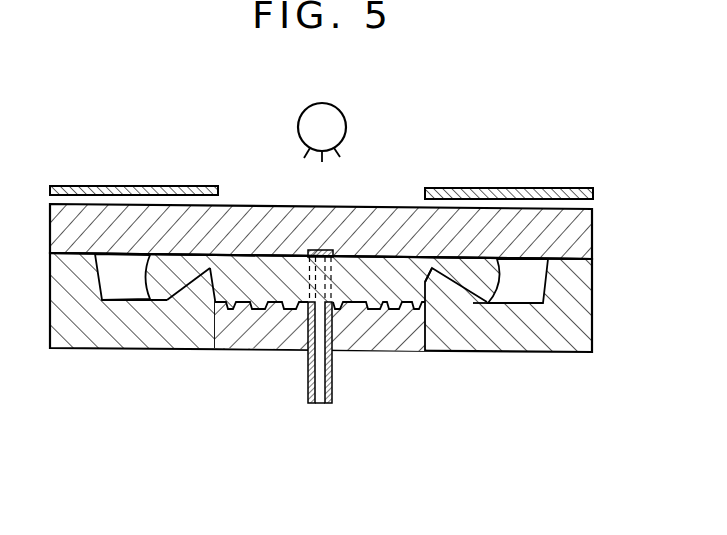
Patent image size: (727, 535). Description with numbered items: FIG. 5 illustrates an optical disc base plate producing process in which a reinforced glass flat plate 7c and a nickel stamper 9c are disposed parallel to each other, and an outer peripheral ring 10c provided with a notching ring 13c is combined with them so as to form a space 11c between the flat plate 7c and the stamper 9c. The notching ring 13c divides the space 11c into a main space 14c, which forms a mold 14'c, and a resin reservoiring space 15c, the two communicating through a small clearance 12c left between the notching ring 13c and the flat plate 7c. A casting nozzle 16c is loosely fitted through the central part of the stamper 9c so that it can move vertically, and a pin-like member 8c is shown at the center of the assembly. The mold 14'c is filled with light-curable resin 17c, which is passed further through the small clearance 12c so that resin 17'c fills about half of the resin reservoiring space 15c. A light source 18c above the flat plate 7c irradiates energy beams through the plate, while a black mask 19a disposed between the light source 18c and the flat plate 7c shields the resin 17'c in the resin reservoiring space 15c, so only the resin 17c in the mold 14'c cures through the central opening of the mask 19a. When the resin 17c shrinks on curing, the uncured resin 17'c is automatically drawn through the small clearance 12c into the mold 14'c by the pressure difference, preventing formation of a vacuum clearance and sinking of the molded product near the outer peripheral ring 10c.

The flat plate 7c is at (580, 232).
The outer peripheral ring 10c is at (578, 328).
The resin reservoiring space 15c is at (528, 277).
The light-curable resin in the resin reservoiring space 17'c is at (154, 224).
The light-curable resin 17c is at (250, 265).
The stamper 9c is at (372, 343).
The notching ring 13c is at (440, 285).
The small clearance 12c is at (432, 268).
The space 11c is at (351, 255).
The main space 14c is at (387, 265).
The mold 14'c is at (362, 236).
The casting nozzle 16c is at (308, 387).
The pin head 8c is at (310, 250).
The light source 18c is at (298, 117).
The black mask 19a is at (527, 188).